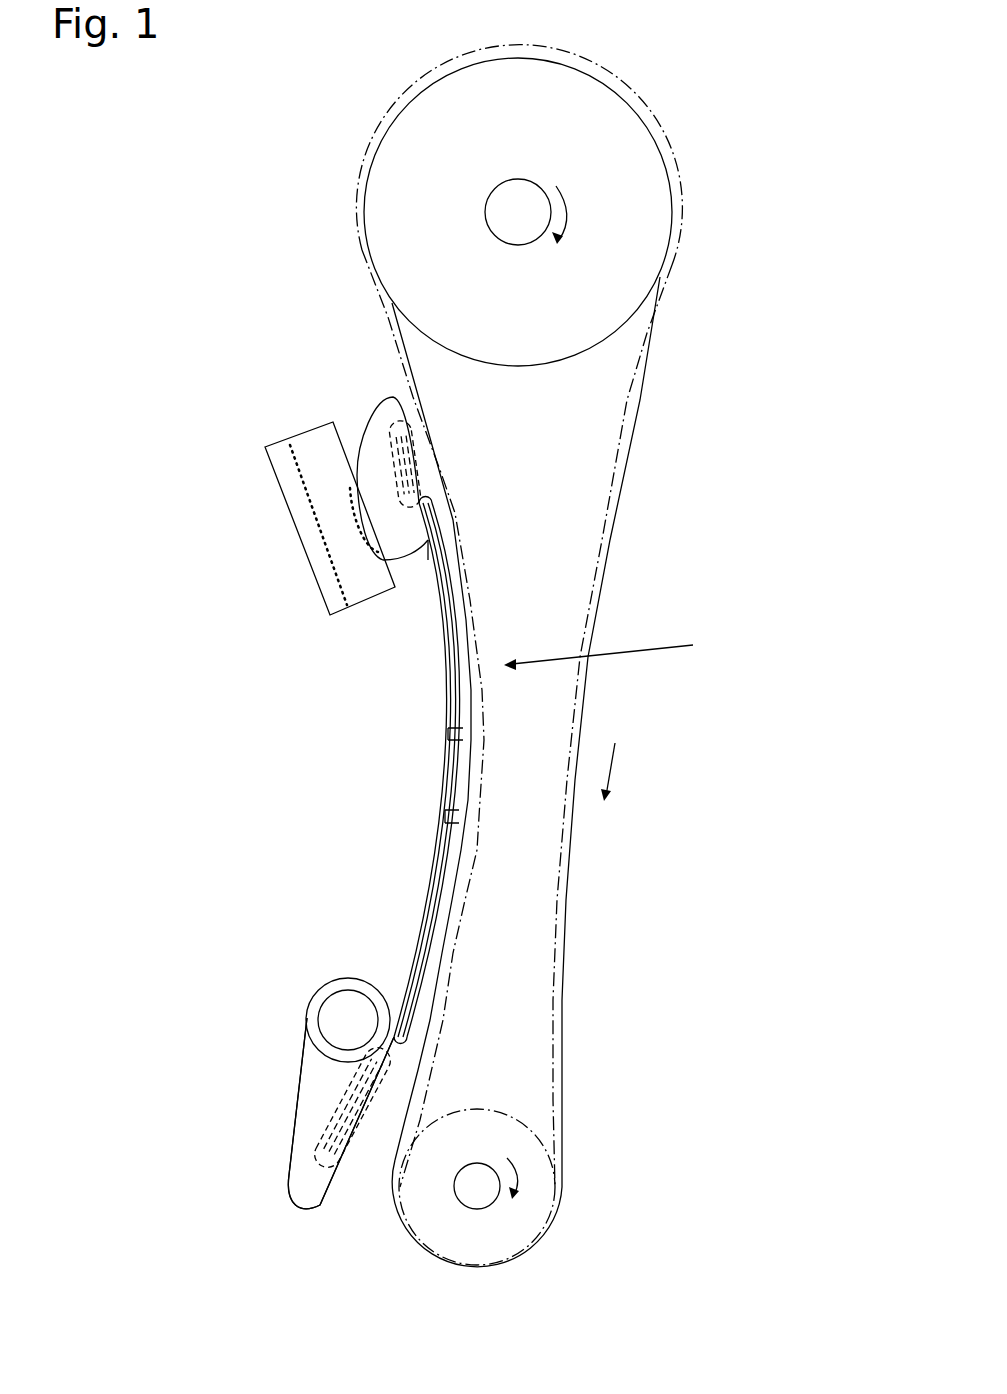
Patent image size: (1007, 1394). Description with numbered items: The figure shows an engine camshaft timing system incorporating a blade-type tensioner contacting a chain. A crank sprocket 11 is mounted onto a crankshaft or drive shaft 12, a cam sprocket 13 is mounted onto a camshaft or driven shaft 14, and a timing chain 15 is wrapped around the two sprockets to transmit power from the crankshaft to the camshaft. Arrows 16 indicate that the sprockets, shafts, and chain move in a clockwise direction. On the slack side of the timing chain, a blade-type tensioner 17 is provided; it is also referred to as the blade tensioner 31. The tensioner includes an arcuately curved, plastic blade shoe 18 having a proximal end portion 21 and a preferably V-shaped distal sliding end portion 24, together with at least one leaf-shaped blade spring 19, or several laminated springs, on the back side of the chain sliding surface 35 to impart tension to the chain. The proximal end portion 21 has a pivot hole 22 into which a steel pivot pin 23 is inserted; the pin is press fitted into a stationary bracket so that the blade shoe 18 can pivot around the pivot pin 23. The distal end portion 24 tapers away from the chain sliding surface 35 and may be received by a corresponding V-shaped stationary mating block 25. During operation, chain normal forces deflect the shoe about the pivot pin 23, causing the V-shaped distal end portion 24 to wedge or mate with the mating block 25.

The crank sprocket 11 is at (492, 1233).
The crankshaft or drive shaft 12 is at (476, 1189).
The cam sprocket 13 is at (585, 128).
The camshaft or driven shaft 14 is at (513, 212).
The timing chain 15 is at (610, 540).
The arrows 16 is at (523, 1177).
The blade-type tensioner 17 is at (618, 646).
The blade shoe 18 is at (450, 740).
The blade spring 19 is at (440, 630).
The proximal end portion 21 is at (237, 990).
The pivot hole 22 is at (352, 993).
The pivot pin 23 is at (350, 1020).
The distal sliding end portion 24 is at (388, 357).
The V-shaped stationary mating block 25 is at (303, 520).
The blade tensioner 31 is at (278, 1240).
The chain sliding surface 35 is at (450, 518).